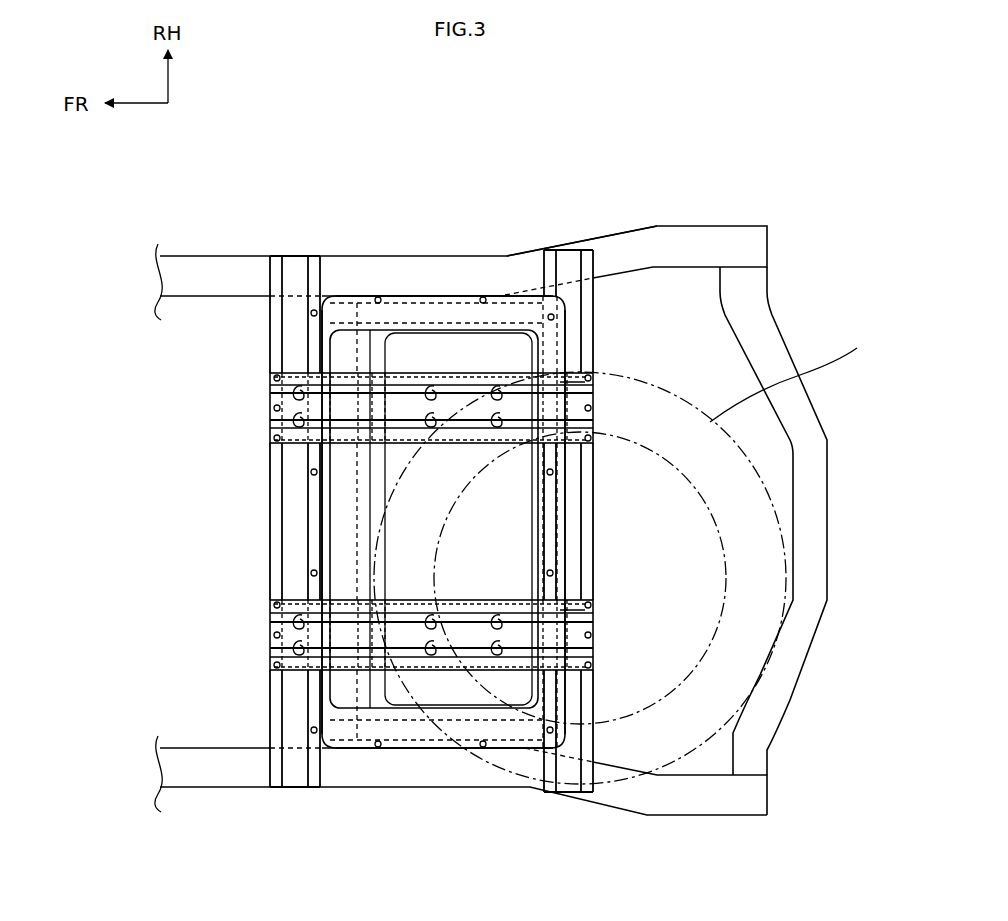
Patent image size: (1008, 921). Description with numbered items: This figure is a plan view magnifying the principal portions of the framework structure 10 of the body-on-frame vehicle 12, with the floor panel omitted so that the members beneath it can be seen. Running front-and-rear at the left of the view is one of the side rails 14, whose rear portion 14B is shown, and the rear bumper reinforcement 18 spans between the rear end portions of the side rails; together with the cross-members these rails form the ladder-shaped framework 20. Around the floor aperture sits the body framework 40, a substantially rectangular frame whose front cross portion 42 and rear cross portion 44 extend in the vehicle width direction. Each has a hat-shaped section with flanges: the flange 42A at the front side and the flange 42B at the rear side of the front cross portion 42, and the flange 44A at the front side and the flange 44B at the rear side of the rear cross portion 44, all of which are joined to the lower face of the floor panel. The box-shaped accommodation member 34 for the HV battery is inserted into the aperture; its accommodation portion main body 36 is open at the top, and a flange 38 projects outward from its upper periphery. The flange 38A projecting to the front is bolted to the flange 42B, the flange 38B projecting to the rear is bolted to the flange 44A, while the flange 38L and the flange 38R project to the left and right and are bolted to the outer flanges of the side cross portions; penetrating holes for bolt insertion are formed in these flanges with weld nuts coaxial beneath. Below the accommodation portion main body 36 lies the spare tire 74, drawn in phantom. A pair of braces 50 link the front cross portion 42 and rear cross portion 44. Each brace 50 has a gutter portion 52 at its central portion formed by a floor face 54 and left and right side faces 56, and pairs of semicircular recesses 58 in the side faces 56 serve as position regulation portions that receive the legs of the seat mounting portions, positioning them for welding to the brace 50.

The framework structure 10 is at (243, 530).
The body-on-frame vehicle 12 is at (481, 217).
The side rail 14 is at (222, 252).
The rear portion of side rail 14B is at (423, 256).
The rear bumper reinforcement 18 is at (822, 522).
The framework 20 is at (191, 794).
The accommodation member 34 is at (513, 256).
The accommodation portion main body 36 is at (396, 700).
The flange 38 is at (383, 529).
The flange 38R is at (417, 300).
The flange 38A is at (310, 509).
The flange 38B is at (556, 537).
The flange 38L is at (512, 733).
The body framework 40 is at (268, 461).
The front cross portion 42 is at (268, 561).
The flange 42A is at (272, 319).
The flange 42B is at (313, 788).
The rear cross portion 44 is at (597, 570).
The flange 44A is at (552, 786).
The flange 44B is at (594, 310).
The brace 50 is at (266, 410).
The gutter portion 52 is at (577, 403).
The floor face 54 is at (595, 415).
The side face 56 is at (431, 388).
The recess 58 is at (297, 388).
The spare tire 74 is at (800, 374).